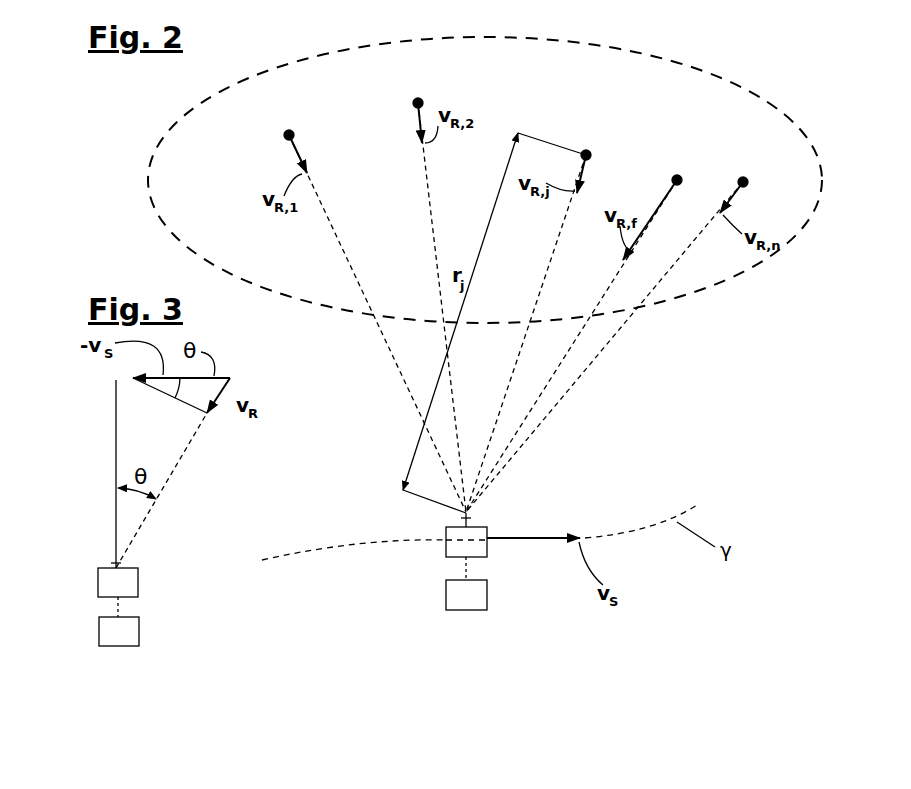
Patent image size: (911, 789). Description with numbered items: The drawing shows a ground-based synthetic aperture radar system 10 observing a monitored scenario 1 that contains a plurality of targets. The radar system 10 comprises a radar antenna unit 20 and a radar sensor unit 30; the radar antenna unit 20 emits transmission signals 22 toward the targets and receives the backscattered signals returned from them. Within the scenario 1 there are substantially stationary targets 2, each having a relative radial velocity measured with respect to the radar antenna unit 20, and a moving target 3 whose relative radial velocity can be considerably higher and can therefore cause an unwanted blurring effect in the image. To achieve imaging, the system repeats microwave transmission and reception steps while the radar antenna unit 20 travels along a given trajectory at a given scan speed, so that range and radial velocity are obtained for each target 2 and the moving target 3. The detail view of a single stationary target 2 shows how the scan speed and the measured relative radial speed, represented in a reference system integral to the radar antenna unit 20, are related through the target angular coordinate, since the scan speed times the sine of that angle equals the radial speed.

In FIG. 2, the monitored scenario 1 is at (737, 80).
In FIG. 2, the stationary target 2 is at (737, 182).
In FIG. 2, the moving target 3 is at (671, 180).
In FIG. 2, the radar system 10 is at (459, 575).
In FIG. 3, the radar system 10 is at (126, 591).
In FIG. 2, the radar antenna unit 20 is at (488, 551).
In FIG. 3, the radar antenna unit 20 is at (140, 590).
In FIG. 2, the transmission signals 22 is at (482, 522).
In FIG. 3, the transmission signals 22 is at (113, 566).
In FIG. 2, the radar sensor unit 30 is at (488, 600).
In FIG. 3, the radar sensor unit 30 is at (140, 637).